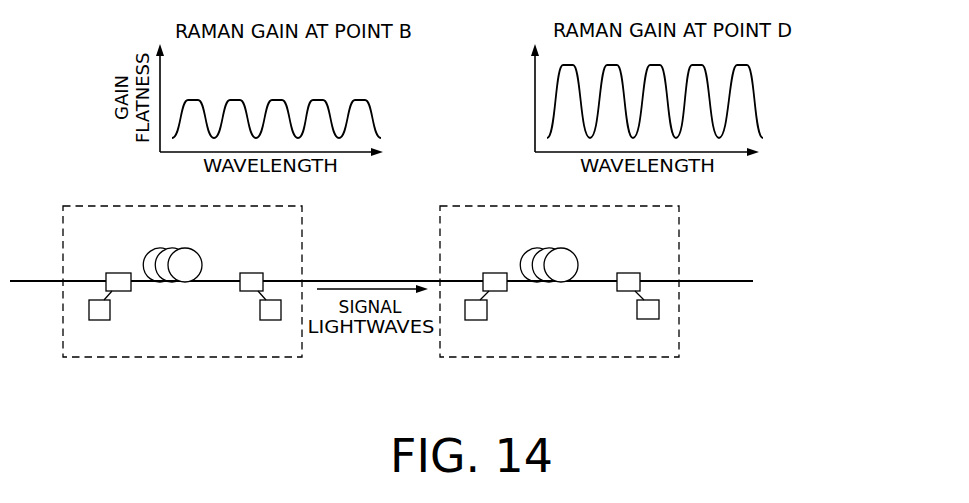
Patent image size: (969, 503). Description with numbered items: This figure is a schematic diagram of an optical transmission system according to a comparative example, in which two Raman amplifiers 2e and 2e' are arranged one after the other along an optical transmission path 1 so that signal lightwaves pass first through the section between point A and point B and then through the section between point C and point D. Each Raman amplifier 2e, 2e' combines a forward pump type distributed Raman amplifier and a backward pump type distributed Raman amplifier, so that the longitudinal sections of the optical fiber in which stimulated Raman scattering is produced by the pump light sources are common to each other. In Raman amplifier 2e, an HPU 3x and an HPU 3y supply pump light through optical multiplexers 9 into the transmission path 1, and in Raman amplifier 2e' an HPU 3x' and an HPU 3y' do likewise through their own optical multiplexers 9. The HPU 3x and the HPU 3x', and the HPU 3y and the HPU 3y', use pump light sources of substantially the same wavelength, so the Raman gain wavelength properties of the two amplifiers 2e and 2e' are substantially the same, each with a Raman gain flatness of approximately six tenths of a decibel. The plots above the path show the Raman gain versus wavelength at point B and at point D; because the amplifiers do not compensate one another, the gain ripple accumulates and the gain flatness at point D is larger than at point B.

The optical transmission path 1 is at (181, 249).
The optical multiplexer 9 is at (118, 273).
The HPU 3x is at (98, 325).
The HPU 3y is at (270, 325).
The HPU 3x' is at (476, 325).
The HPU 3y' is at (648, 325).
The Raman amplifier 2e is at (182, 315).
The Raman amplifier 2e' is at (559, 315).
The point A is at (62, 279).
The point B is at (302, 279).
The point C is at (440, 279).
The point D is at (680, 280).